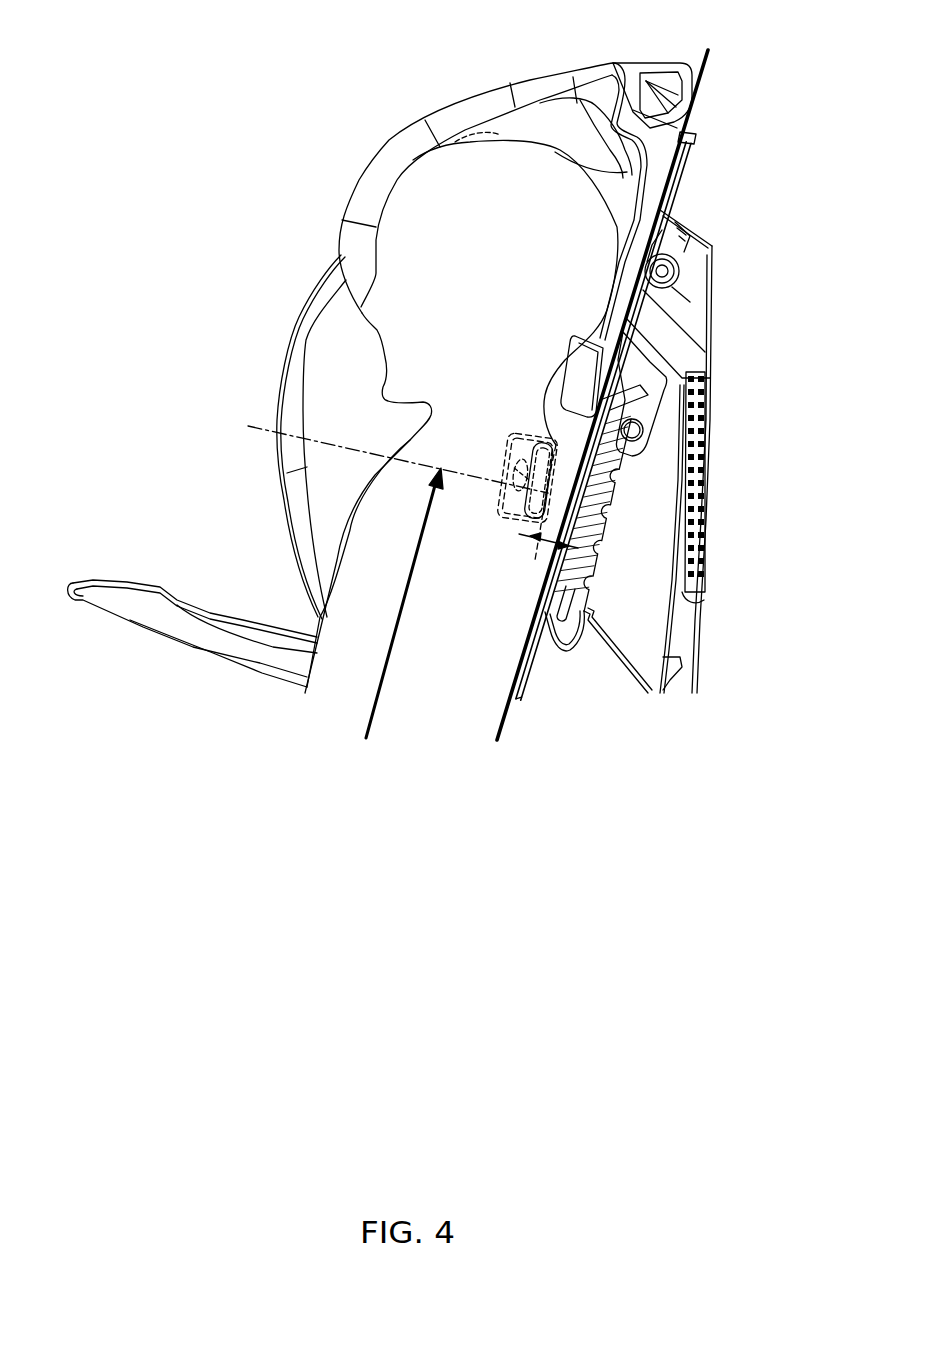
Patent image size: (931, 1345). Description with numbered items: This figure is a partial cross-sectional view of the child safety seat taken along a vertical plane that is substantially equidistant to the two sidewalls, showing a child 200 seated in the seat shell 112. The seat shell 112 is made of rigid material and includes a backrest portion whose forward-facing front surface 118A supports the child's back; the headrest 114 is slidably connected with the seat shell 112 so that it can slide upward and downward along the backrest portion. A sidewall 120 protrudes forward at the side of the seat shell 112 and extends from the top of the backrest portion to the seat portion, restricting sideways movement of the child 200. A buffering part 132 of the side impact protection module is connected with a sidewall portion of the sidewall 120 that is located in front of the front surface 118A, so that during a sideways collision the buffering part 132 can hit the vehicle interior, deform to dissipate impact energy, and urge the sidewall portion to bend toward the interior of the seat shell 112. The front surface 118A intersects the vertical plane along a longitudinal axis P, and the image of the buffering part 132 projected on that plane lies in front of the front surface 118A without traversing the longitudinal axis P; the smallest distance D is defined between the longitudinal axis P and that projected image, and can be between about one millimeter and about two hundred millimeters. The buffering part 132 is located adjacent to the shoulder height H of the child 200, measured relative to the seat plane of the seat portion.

The headrest 114 is at (546, 80).
The child 200 is at (407, 187).
The sidewall 120 is at (287, 311).
The buffering part 132 is at (508, 447).
The front surface 118A is at (617, 478).
The seat shell 112 is at (705, 640).
The shoulder height H is at (400, 602).
The smallest distance D is at (540, 537).
The longitudinal axis P is at (498, 720).